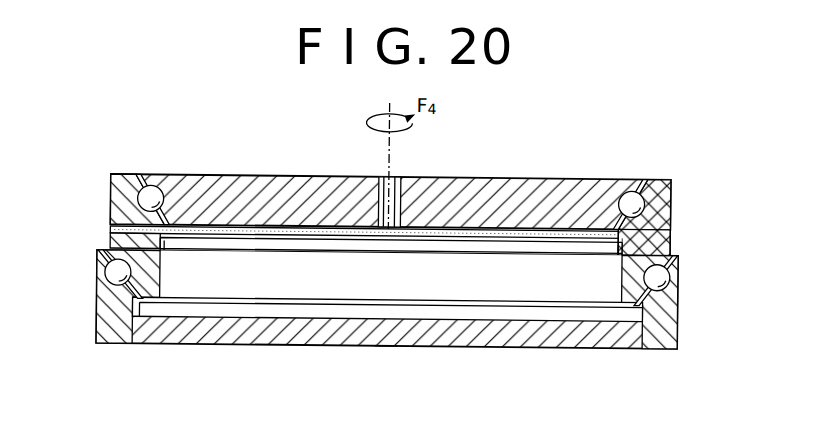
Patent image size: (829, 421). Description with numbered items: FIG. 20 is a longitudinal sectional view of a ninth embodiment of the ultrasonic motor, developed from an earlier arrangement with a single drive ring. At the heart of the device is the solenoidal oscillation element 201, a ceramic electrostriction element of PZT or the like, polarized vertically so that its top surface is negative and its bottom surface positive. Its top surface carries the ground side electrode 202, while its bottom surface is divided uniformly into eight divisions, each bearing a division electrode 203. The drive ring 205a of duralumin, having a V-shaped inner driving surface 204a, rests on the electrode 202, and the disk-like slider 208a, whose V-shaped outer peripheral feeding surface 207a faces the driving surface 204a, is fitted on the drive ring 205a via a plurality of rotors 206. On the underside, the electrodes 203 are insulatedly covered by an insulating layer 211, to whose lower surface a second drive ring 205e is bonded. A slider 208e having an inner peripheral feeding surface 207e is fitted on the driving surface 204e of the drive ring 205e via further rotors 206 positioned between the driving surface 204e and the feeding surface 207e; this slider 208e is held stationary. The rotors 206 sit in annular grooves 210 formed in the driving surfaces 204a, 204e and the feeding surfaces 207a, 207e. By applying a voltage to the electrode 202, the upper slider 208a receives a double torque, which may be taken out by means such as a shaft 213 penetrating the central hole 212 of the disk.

The solenoidal oscillation element 201 is at (293, 216).
The ground side electrode 202 is at (248, 222).
The division electrodes 203 is at (282, 301).
The driving surface 204a is at (156, 226).
The driving surface 204e is at (642, 240).
The drive ring 205a is at (657, 176).
The drive ring 205e is at (636, 242).
The rotors 206 is at (618, 185).
The feeding surface 207a is at (146, 183).
The feeding surface 207e is at (668, 267).
The slider 208a is at (511, 182).
The slider 208e is at (477, 328).
The annular grooves 210 is at (170, 184).
The insulating layer 211 is at (645, 222).
The central hole 212 is at (392, 182).
The shaft 213 is at (381, 144).